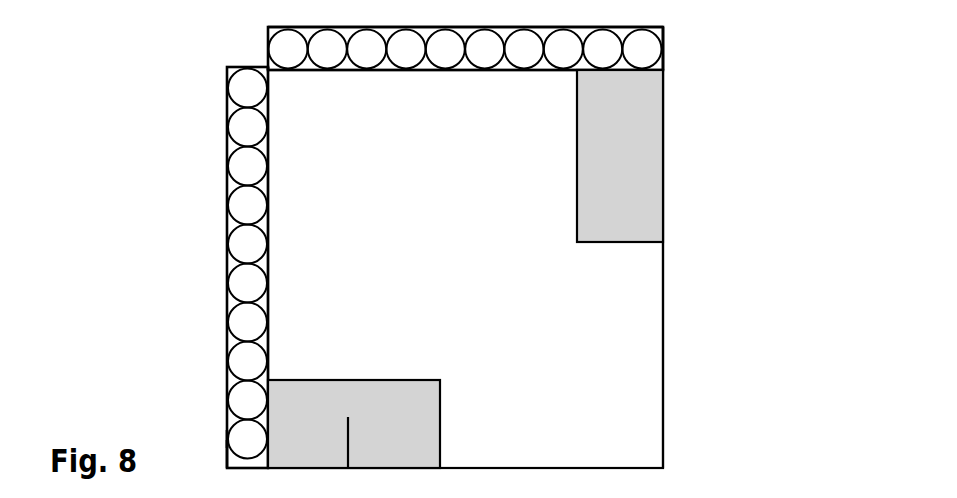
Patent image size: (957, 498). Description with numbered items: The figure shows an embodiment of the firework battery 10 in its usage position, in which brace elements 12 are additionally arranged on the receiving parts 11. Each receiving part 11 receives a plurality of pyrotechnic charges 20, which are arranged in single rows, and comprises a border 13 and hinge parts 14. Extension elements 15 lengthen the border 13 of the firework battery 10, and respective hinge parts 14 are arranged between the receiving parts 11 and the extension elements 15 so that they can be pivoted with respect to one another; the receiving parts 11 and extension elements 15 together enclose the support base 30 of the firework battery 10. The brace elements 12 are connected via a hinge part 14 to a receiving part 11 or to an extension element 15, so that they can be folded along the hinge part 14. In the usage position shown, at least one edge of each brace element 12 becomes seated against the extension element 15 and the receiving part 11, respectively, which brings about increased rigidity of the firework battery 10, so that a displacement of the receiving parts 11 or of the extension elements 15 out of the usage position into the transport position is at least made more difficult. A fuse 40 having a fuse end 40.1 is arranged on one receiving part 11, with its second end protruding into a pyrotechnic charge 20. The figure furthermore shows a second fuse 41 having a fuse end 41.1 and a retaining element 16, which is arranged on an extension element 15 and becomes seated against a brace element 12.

The firework battery 10 is at (204, 105).
The receiving part 11 is at (227, 182).
The brace element 12 is at (632, 160).
The border 13 is at (650, 28).
The hinge part 14 is at (268, 68).
The extension element 15 is at (610, 468).
The retaining element 16 is at (348, 417).
The pyrotechnic charge 20 is at (243, 247).
The support base 30 is at (467, 252).
The fuse 40 is at (218, 442).
The fuse end 40.1 is at (139, 423).
The second fuse 41 is at (687, 50).
The fuse end 41.1 is at (738, 48).